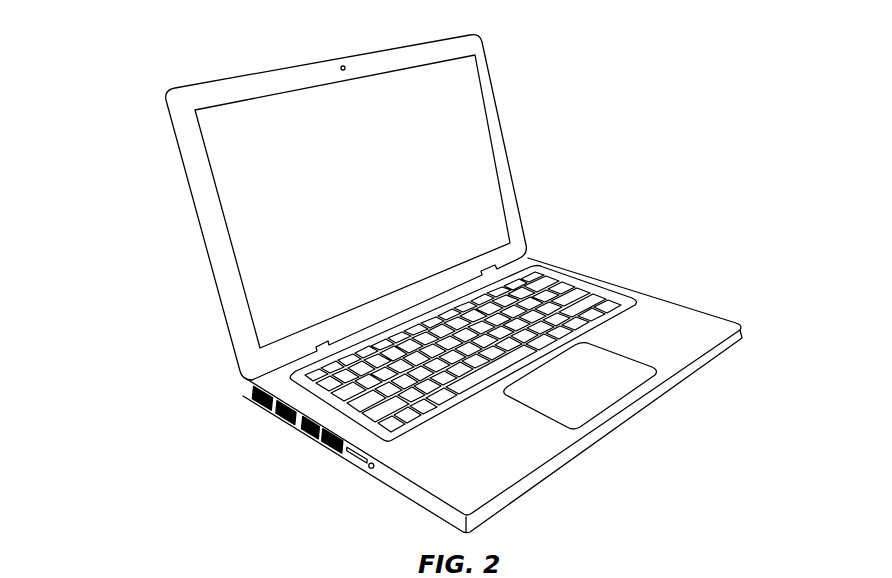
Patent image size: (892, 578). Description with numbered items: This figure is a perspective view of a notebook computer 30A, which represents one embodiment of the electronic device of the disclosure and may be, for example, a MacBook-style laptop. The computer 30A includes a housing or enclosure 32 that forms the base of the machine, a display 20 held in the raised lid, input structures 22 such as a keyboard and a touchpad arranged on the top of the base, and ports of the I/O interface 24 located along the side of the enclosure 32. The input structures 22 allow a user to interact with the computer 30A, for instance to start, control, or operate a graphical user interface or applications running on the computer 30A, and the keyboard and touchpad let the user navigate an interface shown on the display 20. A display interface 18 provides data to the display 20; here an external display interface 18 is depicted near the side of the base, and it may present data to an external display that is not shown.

The notebook computer 30A is at (414, 284).
The display 20 is at (465, 118).
The input structures 22 is at (607, 292).
The housing or enclosure 32 is at (485, 395).
The ports of the I/O interface 24 is at (287, 428).
The display interface 18 is at (250, 385).